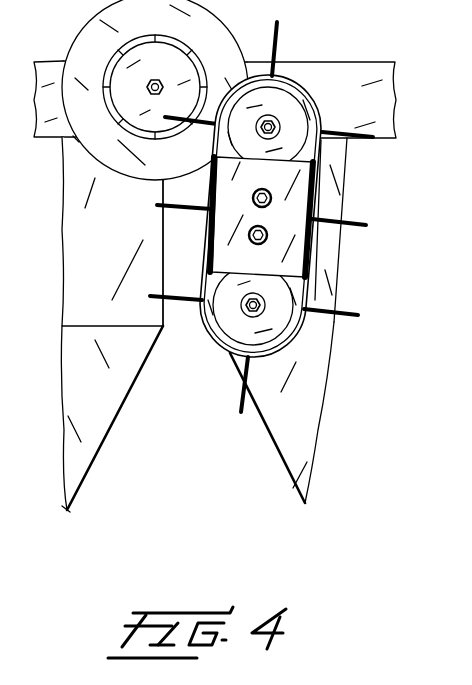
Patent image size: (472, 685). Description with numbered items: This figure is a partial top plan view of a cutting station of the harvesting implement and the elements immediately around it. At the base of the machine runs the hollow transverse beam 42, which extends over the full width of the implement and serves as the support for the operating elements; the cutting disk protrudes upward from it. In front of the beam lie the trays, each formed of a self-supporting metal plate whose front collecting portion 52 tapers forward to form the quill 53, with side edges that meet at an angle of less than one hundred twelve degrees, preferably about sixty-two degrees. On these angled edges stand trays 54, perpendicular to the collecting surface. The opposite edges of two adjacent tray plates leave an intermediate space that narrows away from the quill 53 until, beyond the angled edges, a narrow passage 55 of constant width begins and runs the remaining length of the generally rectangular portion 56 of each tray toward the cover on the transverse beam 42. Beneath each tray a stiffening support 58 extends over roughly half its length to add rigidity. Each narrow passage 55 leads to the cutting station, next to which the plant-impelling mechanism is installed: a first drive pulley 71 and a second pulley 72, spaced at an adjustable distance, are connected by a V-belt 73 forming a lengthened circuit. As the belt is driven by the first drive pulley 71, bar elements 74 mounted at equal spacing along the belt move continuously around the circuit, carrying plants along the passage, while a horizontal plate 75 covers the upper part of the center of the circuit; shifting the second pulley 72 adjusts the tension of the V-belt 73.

The hollow transverse beam 42 is at (390, 95).
The front collecting portion 52 is at (63, 389).
The quill 53 is at (67, 512).
The trays 54 is at (110, 430).
The narrow passage 55 is at (178, 252).
The generally rectangular portion 56 is at (339, 257).
The stiffening support 58 is at (112, 231).
The first drive pulley 71 is at (292, 86).
The second pulley 72 is at (218, 343).
The V-belt 73 is at (308, 290).
The bar elements 74 is at (345, 320).
The horizontal plate 75 is at (261, 217).